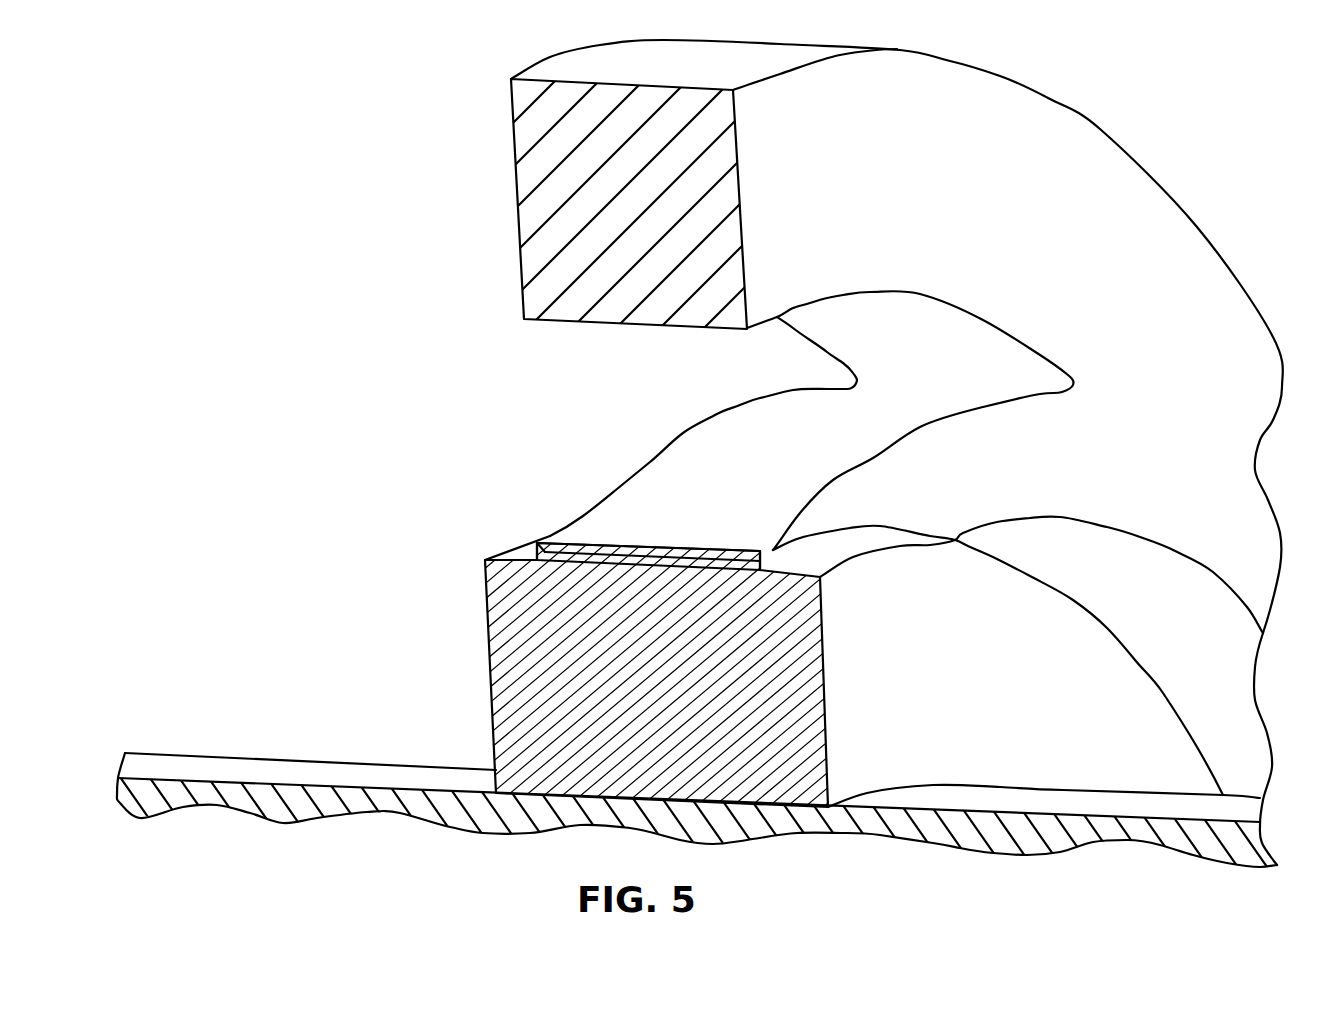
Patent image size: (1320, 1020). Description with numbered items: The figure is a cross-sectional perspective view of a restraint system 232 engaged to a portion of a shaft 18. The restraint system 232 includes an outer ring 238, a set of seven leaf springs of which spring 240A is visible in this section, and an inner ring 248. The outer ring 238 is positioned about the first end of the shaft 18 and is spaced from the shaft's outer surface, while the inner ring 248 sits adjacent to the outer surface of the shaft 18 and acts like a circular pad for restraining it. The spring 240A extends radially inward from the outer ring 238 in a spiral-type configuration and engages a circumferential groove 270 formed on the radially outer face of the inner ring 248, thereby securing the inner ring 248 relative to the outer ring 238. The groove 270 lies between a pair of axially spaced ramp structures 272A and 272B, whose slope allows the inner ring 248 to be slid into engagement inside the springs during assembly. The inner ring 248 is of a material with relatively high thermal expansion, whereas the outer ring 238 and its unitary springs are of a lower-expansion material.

The restraint system 232 is at (250, 221).
The outer ring 238 is at (530, 178).
The spring 240A is at (692, 442).
The inner ring 248 is at (505, 648).
The circumferential groove 270 is at (580, 555).
The ramp structure 272A is at (823, 550).
The ramp structure 272B is at (513, 543).
The shaft 18 is at (323, 776).